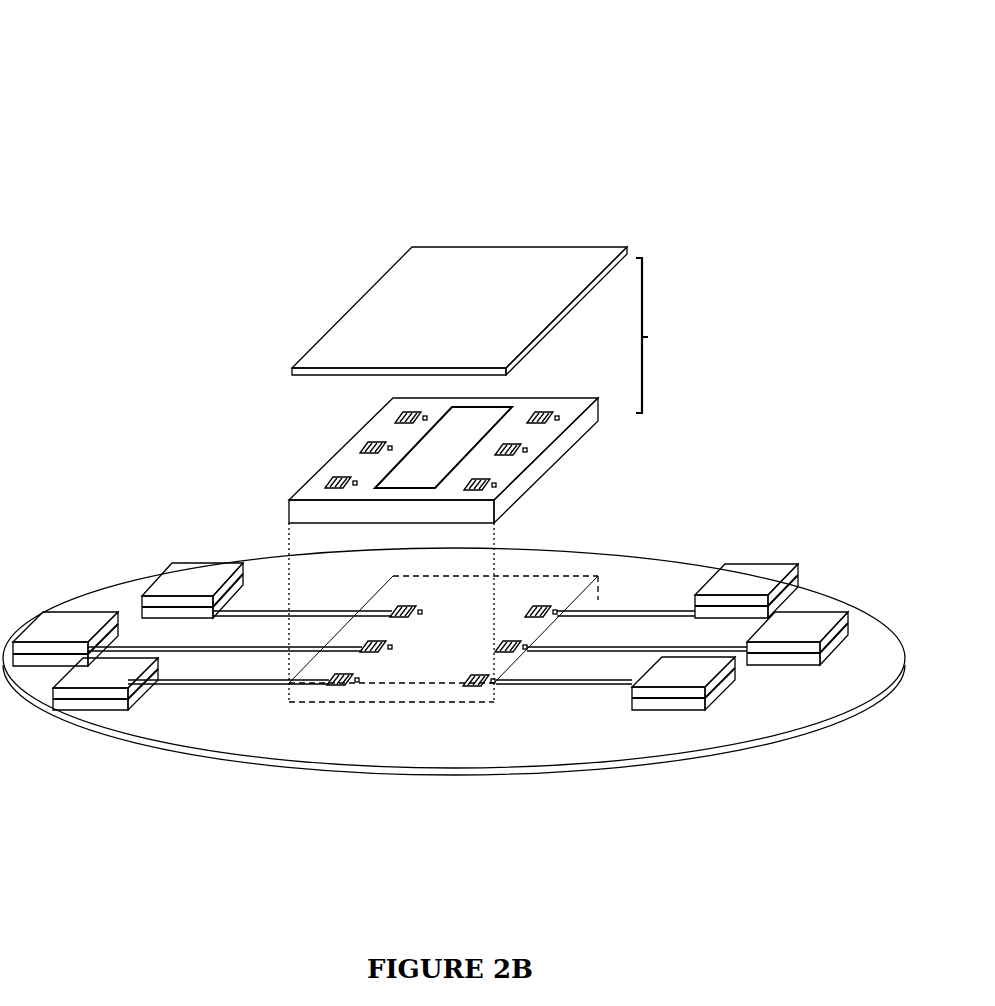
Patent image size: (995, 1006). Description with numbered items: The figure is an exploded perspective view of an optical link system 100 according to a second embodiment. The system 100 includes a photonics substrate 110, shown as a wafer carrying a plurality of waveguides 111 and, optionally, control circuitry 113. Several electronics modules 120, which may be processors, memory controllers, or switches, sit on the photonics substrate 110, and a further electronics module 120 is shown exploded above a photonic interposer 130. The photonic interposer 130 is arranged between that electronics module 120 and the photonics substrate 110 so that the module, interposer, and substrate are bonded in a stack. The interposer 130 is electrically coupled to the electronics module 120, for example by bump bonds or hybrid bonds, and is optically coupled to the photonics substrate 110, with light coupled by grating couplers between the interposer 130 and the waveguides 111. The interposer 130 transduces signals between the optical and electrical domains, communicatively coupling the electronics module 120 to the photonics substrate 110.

The optical link system 100 is at (108, 38).
The photonics substrate 110 is at (632, 591).
The waveguides 111 is at (238, 704).
The control circuitry 113 is at (422, 458).
The electronics modules 120 is at (432, 316).
The photonic interposer 130 is at (600, 466).